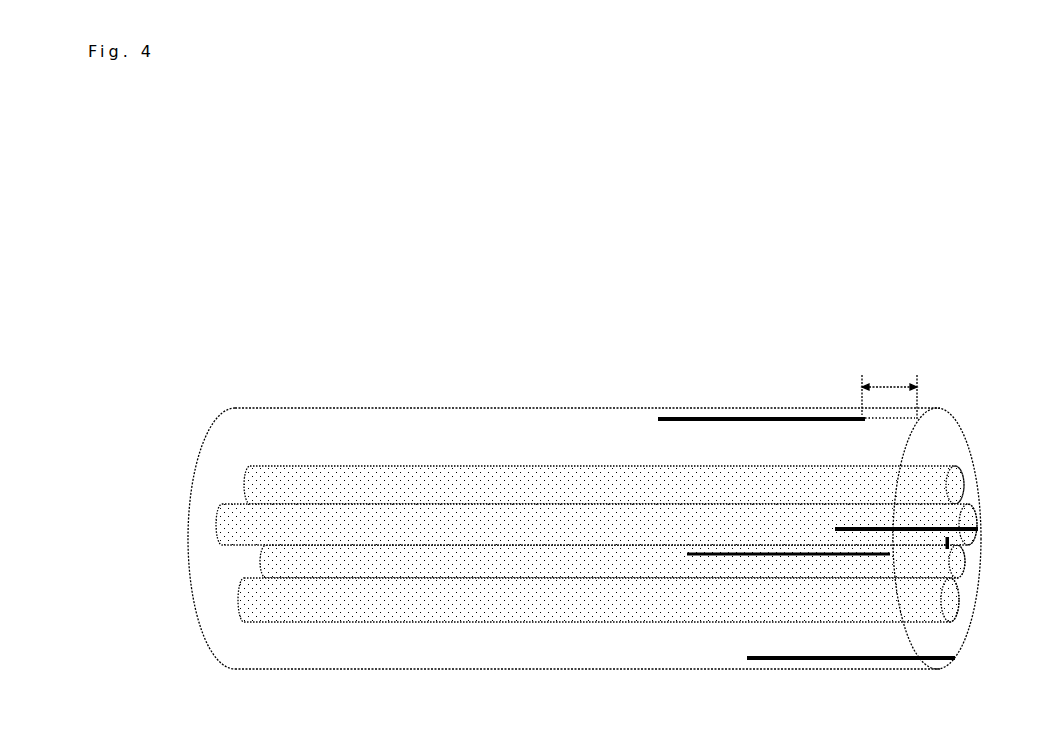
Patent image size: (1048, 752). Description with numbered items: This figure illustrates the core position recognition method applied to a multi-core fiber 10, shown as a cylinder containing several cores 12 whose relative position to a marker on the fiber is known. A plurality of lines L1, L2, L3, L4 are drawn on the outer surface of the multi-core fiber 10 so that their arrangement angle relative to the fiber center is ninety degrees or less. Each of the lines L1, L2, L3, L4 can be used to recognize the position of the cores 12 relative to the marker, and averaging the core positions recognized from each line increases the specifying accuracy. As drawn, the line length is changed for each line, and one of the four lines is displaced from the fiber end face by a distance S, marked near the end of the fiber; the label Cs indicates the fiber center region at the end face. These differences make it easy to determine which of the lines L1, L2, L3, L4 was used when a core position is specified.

The multi-core fiber 10 is at (368, 408).
The cores 12 is at (289, 622).
The line L1 is at (777, 556).
The line L2 is at (787, 670).
The line L3 is at (965, 528).
The line L4 is at (772, 419).
The fiber end Cs is at (949, 544).
The dimension S is at (889, 394).